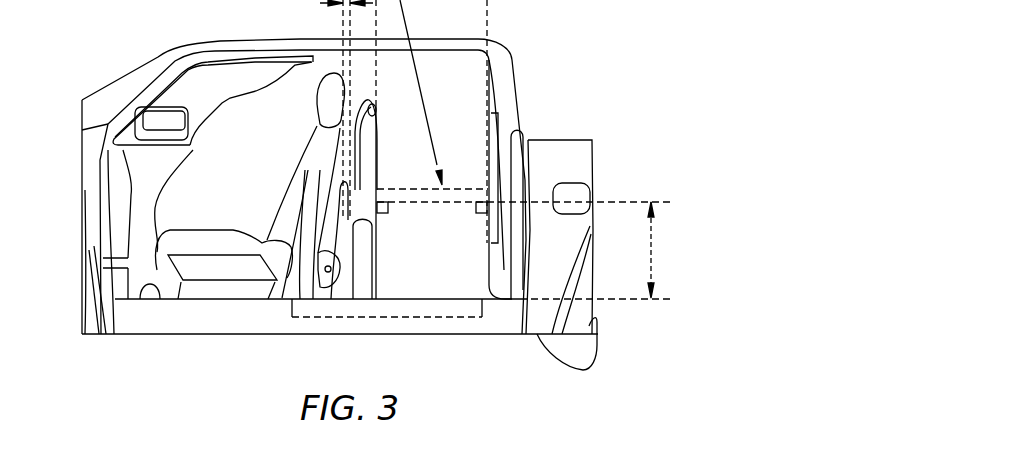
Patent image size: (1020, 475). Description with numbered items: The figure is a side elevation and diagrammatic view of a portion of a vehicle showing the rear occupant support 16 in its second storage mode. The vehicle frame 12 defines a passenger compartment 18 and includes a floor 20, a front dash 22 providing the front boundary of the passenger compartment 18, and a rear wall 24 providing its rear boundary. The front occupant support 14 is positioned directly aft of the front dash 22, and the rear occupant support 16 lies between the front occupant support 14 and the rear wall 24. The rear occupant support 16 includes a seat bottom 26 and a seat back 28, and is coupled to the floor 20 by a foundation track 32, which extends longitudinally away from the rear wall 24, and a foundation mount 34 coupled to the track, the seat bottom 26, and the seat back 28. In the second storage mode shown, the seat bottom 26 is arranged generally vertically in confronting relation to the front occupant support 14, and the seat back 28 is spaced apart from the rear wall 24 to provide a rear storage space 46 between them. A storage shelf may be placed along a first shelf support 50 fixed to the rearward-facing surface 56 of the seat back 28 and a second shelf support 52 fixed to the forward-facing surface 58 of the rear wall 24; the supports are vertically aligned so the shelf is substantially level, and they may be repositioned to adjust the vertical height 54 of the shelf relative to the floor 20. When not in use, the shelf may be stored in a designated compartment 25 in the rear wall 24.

The vehicle frame 12 is at (229, 40).
The front occupant support 14 is at (248, 172).
The rear occupant support 16 is at (355, 104).
The passenger compartment 18 is at (441, 83).
The floor 20 is at (147, 300).
The front dash 22 is at (127, 192).
The rear wall 24 is at (505, 108).
The designated compartment 25 is at (504, 214).
The seat bottom 26 is at (308, 256).
The seat back 28 is at (370, 133).
The foundation track 32 is at (449, 335).
The foundation mount 34 is at (355, 303).
The rear storage space 46 is at (400, 174).
The first shelf support 50 is at (386, 234).
The second shelf support 52 is at (477, 234).
The vertical height 54 is at (653, 250).
The rearward-facing surface 56 is at (378, 147).
The forward-facing surface 58 is at (487, 147).